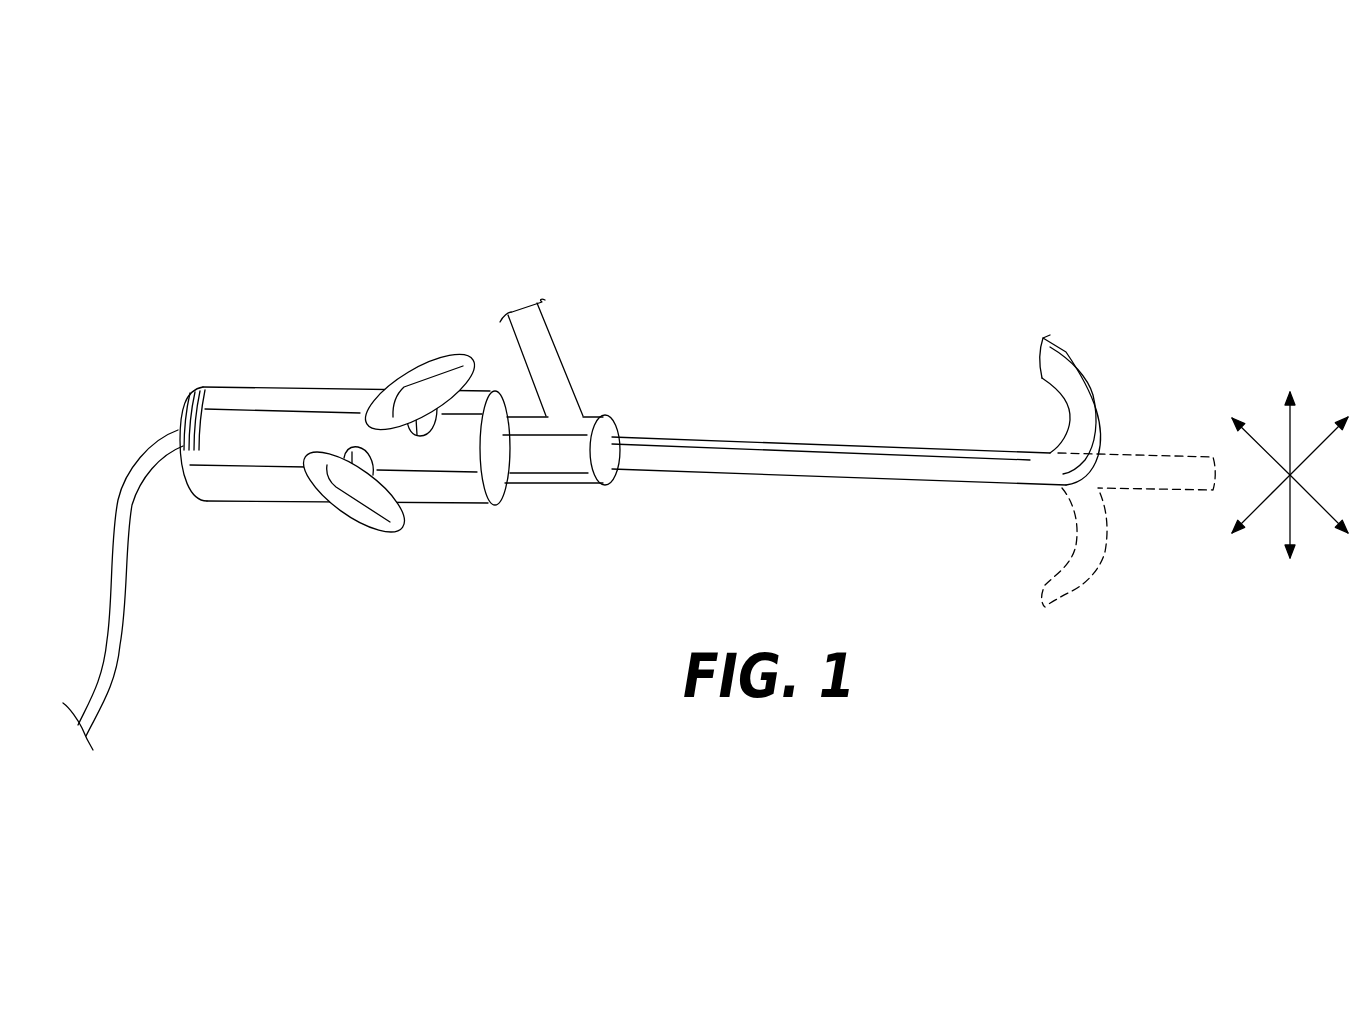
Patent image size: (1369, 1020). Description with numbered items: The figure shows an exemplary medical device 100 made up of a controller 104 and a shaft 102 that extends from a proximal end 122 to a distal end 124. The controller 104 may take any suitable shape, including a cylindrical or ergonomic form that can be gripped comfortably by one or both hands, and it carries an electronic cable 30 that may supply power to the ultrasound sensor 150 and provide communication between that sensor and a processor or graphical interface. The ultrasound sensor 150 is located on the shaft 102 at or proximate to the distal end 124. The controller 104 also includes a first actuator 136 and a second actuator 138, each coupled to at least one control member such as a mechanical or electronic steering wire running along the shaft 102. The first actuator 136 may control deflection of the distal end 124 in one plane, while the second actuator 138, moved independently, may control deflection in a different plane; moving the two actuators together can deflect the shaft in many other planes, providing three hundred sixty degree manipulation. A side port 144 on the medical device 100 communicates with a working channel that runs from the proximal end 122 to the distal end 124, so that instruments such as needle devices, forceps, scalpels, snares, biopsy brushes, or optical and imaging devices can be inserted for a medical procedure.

The medical device 100 is at (128, 146).
The electronic cable 30 is at (112, 593).
The controller 104 is at (241, 507).
The second actuator 138 is at (418, 362).
The first actuator 136 is at (365, 530).
The proximal end 122 is at (633, 470).
The side port 144 is at (542, 327).
The shaft 102 is at (830, 479).
The distal end 124 is at (1050, 338).
The ultrasound sensor 150 is at (1062, 375).